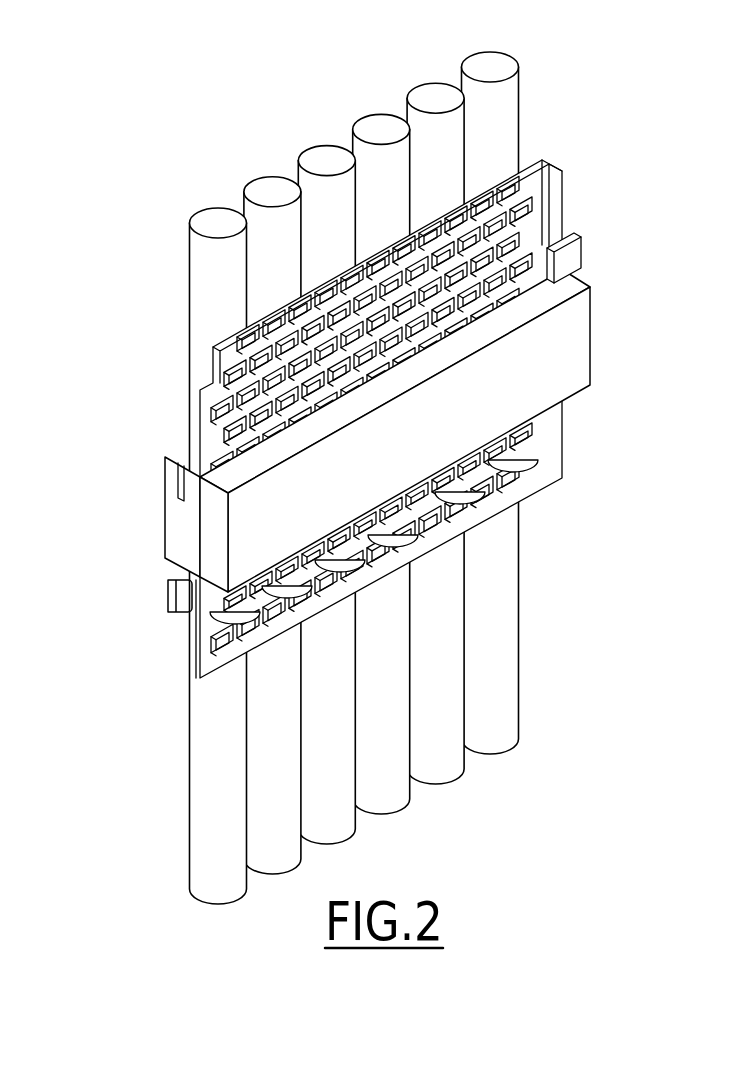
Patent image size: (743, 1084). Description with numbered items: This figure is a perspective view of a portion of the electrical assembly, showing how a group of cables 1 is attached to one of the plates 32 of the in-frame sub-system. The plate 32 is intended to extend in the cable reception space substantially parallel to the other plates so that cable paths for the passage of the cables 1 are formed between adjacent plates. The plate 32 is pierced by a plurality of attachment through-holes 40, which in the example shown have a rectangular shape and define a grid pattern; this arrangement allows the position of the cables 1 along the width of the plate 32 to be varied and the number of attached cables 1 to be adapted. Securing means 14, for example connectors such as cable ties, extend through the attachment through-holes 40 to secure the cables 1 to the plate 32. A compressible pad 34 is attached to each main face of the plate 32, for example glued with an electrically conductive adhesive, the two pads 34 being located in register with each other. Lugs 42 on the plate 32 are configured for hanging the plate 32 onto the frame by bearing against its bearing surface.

The cable 1 is at (215, 232).
The securing means 14 is at (240, 616).
The plate 32 is at (432, 403).
The compressible pad 34 is at (550, 353).
The attachment through-hole 40 is at (548, 236).
The lug 42 is at (572, 261).